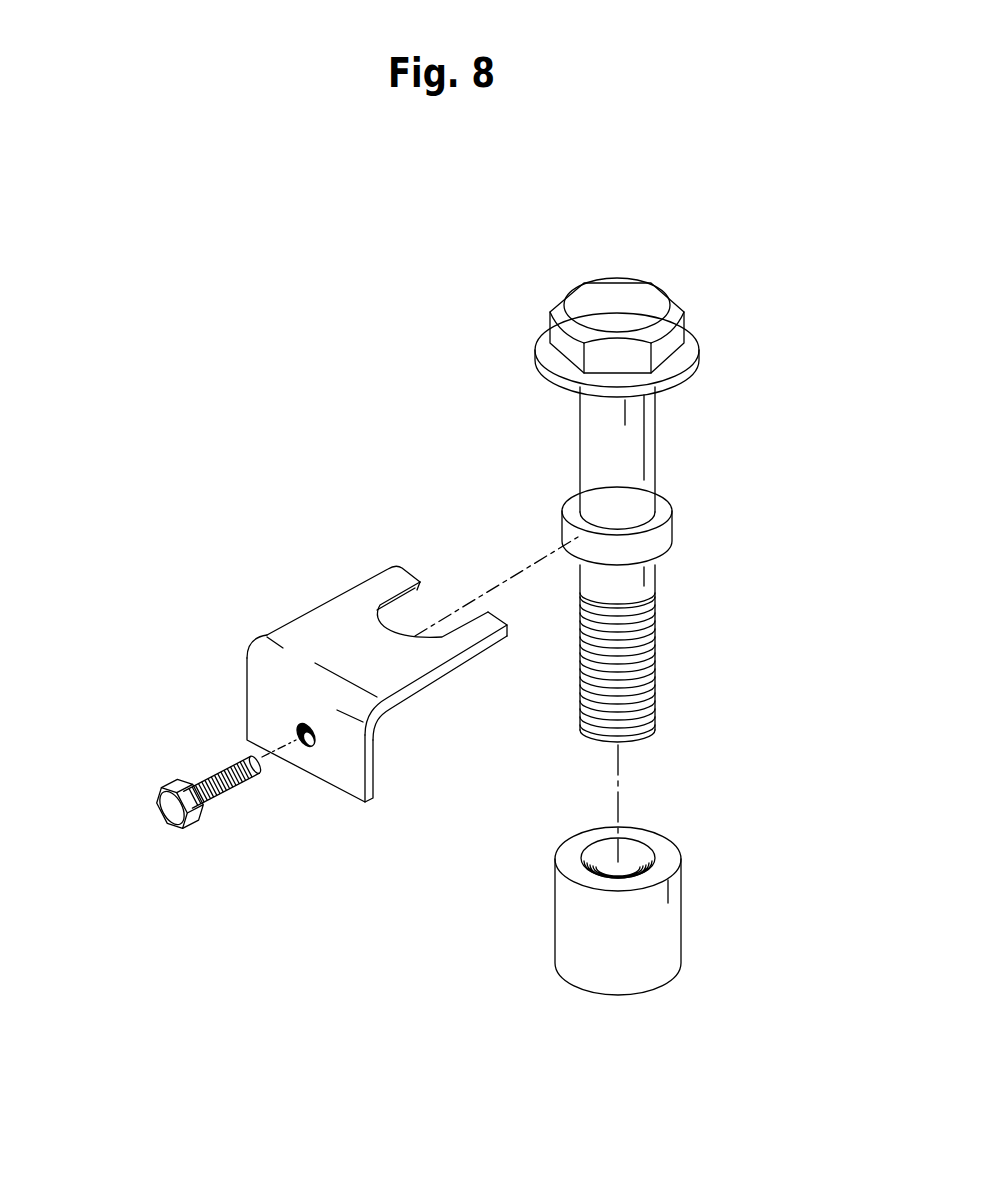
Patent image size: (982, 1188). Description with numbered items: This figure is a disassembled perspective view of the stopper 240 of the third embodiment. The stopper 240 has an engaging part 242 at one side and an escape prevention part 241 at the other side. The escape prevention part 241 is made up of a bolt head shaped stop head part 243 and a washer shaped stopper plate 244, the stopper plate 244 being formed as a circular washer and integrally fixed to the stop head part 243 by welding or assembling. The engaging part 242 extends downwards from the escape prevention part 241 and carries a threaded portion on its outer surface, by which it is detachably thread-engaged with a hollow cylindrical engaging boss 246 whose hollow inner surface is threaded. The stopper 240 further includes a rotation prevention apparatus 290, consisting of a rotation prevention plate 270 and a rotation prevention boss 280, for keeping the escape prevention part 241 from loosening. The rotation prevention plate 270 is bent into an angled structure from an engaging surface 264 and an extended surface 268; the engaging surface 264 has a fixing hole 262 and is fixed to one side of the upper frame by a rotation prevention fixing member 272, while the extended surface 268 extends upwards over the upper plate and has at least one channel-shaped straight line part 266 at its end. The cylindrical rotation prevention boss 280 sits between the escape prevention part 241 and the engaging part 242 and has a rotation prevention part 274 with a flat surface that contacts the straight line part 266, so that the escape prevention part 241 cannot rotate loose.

The stopper 240 is at (840, 198).
The escape prevention part 241 is at (407, 260).
The engaging part 242 is at (653, 657).
The stop head part 243 is at (588, 303).
The stopper plate 244 is at (550, 368).
The engaging boss 246 is at (668, 933).
The fixing hole 262 is at (310, 748).
The engaging surface 264 is at (263, 693).
The straight line part 266 is at (420, 572).
The extended surface 268 is at (313, 617).
The rotation prevention plate 270 is at (130, 437).
The rotation prevention fixing member 272 is at (170, 810).
The rotation prevention part 274 is at (657, 535).
The rotation prevention boss 280 is at (557, 507).
The rotation prevention apparatus 290 is at (147, 380).